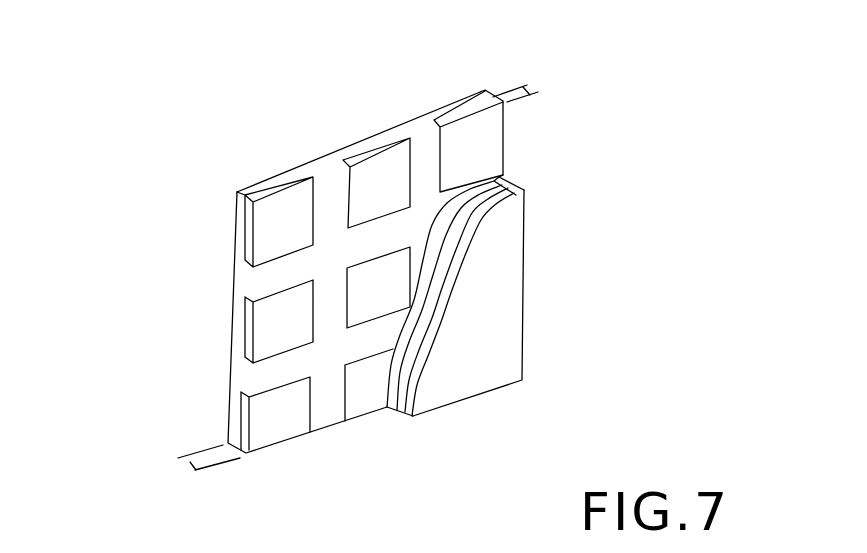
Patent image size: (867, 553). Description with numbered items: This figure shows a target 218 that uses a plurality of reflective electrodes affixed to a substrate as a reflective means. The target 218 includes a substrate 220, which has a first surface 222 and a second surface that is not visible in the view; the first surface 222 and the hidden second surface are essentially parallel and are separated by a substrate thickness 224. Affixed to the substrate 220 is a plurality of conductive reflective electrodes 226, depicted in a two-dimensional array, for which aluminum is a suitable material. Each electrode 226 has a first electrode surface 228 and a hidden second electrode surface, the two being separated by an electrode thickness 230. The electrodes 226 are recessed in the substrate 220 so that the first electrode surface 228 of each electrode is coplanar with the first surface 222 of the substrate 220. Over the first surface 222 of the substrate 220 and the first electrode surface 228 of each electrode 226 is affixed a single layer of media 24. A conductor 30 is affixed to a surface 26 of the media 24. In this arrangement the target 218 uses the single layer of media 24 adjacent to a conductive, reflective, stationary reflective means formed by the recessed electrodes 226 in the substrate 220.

The target 218 is at (360, 259).
The substrate 220 is at (323, 405).
The first surface 222 is at (423, 215).
The substrate thickness 224 is at (190, 462).
The conductive reflective electrodes 226 is at (370, 185).
The first electrode surface 228 is at (490, 138).
The electrode thickness 230 is at (529, 89).
The media 24 is at (402, 348).
The surface 26 is at (452, 263).
The conductor 30 is at (502, 350).